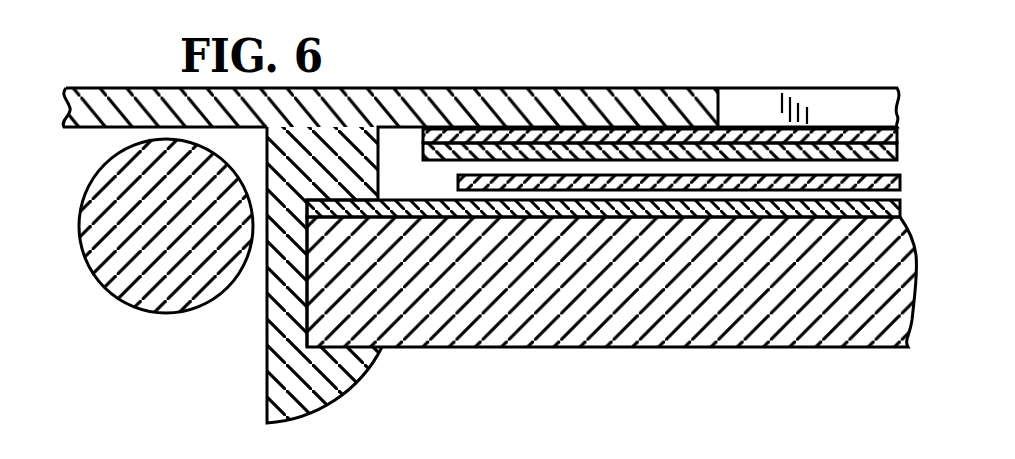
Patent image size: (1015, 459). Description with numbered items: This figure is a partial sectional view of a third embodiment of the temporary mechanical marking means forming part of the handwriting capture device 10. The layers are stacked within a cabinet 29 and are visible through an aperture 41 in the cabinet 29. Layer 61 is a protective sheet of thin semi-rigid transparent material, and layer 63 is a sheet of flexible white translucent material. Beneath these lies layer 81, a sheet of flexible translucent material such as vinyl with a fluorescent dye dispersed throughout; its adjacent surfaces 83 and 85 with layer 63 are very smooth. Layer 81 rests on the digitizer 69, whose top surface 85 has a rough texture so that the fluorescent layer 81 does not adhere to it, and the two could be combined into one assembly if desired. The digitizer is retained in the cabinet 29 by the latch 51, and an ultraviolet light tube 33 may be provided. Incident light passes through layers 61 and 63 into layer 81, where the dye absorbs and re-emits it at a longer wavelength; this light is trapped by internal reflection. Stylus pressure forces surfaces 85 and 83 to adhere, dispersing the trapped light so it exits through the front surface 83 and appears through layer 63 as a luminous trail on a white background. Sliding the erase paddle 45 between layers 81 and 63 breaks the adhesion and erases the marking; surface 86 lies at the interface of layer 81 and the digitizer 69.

The electrical connector assembly 10 is at (866, 47).
The cabinet 29 is at (428, 88).
The ultraviolet light tube 33 is at (126, 304).
The aperture 41 is at (722, 112).
The erase paddle 45 is at (900, 185).
The latch 51 is at (305, 418).
The protective sheet 61 is at (897, 135).
The translucent layer 63 is at (895, 150).
The digitizer 69 is at (917, 292).
The fluorescent layer 81 is at (902, 207).
The front surface 83 is at (618, 190).
The adjacent surface 85 is at (447, 162).
The interface surface 86 is at (518, 220).